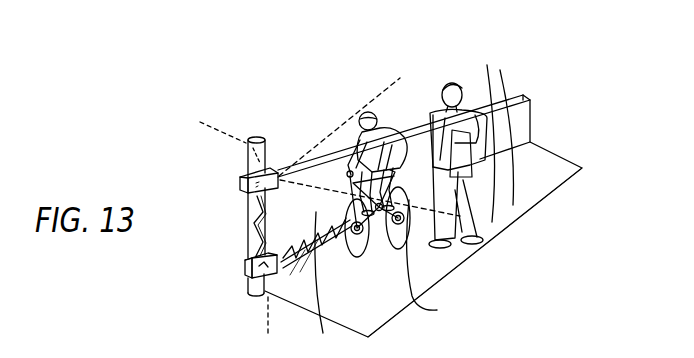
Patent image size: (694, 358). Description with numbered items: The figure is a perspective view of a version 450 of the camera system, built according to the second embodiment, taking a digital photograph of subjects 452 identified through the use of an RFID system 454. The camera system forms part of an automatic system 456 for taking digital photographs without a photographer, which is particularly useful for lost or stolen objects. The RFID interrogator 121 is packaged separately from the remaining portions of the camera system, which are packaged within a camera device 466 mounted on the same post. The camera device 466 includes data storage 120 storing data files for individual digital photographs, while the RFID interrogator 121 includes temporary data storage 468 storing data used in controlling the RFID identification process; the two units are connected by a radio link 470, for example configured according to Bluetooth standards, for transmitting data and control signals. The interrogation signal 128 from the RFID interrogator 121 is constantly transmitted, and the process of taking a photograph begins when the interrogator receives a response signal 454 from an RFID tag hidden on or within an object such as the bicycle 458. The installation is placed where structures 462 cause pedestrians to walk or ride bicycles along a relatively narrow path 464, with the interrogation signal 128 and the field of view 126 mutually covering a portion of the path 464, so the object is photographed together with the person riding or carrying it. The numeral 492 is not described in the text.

The data storage 120 is at (220, 131).
The field of view 126 is at (332, 122).
The automatic system 456 is at (217, 194).
The camera device 466 is at (244, 194).
The radio link 470 is at (248, 240).
The RFID interrogator 121 is at (250, 270).
The version of the camera system 450 is at (250, 302).
The temporary data storage 468 is at (264, 326).
The RFID system 454 is at (326, 283).
The bicycle 458 is at (438, 260).
The interrogation signal 128 is at (513, 205).
The subjects 452 is at (503, 272).
The structures 462 is at (538, 98).
The path 464 is at (553, 154).
The adjacent figure element 492 is at (76, 357).